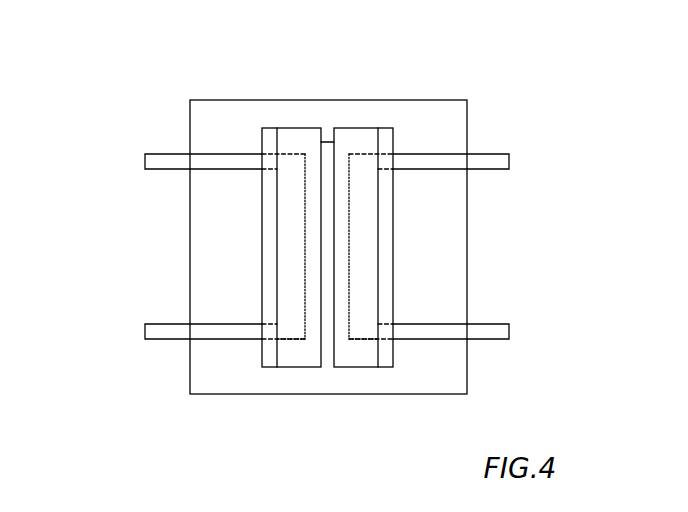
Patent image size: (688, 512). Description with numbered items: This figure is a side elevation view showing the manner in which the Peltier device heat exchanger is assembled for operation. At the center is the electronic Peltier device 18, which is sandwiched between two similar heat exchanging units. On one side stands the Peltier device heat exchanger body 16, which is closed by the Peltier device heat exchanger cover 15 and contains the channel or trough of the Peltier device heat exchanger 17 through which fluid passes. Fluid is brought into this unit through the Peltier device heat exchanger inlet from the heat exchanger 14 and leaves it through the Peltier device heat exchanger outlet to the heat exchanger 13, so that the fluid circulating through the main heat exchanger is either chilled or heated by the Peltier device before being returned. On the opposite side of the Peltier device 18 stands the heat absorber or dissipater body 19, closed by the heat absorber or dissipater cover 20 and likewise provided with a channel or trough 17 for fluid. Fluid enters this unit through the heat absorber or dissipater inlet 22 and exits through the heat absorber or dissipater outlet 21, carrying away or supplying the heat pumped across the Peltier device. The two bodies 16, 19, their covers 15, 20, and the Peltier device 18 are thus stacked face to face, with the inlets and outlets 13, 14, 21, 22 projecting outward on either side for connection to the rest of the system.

The Peltier device heat exchanger outlet to heat exchanger 13 is at (510, 155).
The Peltier device heat exchanger inlet from heat exchanger 14 is at (509, 325).
The Peltier device heat exchanger cover 15 is at (393, 297).
The Peltier device heat exchanger body 16 is at (372, 128).
The channel or trough of Peltier device heat exchanger 17 is at (292, 309).
The electronic Peltier device 18 is at (320, 155).
The heat absorber or dissipater body 19 is at (292, 353).
The heat absorber or dissipater cover 20 is at (262, 282).
The heat absorber or dissipater outlet 21 is at (145, 154).
The heat absorber or dissipater inlet 22 is at (144, 338).